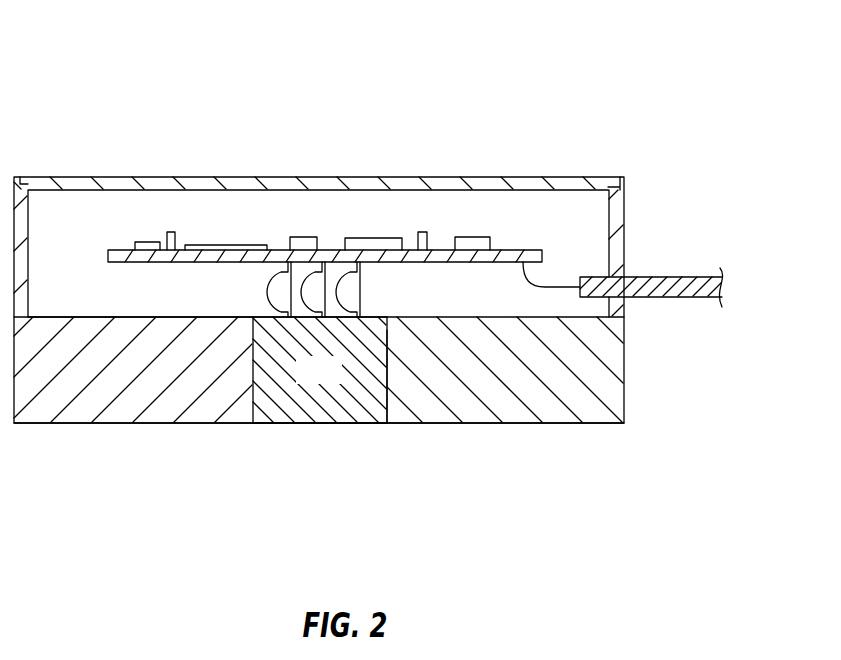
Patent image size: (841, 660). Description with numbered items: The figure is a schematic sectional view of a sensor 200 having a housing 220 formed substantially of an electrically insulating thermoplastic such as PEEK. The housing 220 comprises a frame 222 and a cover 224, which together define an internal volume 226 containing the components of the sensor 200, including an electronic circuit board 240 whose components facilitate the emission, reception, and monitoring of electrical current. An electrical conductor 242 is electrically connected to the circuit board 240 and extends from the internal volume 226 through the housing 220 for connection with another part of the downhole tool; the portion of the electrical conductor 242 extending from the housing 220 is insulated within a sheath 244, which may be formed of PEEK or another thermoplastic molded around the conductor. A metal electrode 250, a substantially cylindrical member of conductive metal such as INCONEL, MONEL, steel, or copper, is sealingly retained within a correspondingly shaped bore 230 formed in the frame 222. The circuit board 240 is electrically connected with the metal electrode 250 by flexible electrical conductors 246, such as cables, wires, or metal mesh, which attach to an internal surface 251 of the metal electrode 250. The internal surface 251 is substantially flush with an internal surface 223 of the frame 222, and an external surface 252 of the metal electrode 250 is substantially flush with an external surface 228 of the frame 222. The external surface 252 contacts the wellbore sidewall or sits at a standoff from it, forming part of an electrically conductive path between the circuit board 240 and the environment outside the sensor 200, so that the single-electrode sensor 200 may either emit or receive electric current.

The sensor 200 is at (150, 106).
The housing 220 is at (642, 205).
The frame 222 is at (625, 380).
The internal surface of the frame 223 is at (133, 317).
The cover 224 is at (450, 177).
The internal volume 226 is at (573, 217).
The external surface of the frame 228 is at (535, 423).
The bore 230 is at (387, 410).
The electronic circuit board 240 is at (125, 250).
The electrical conductor 242 is at (635, 298).
The sheath 244 is at (692, 298).
The electrical conductors 246 is at (357, 262).
The metal electrode 250 is at (300, 383).
The internal surface of the metal electrode 251 is at (262, 317).
The external surface of the metal electrode 252 is at (300, 423).